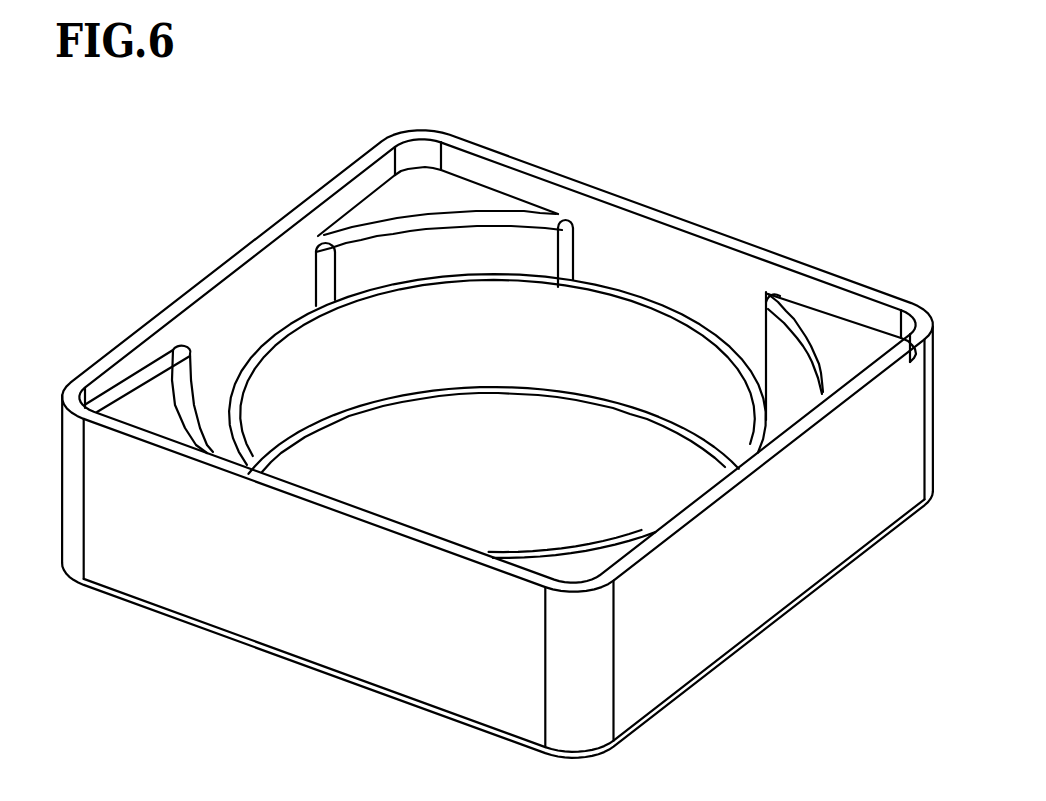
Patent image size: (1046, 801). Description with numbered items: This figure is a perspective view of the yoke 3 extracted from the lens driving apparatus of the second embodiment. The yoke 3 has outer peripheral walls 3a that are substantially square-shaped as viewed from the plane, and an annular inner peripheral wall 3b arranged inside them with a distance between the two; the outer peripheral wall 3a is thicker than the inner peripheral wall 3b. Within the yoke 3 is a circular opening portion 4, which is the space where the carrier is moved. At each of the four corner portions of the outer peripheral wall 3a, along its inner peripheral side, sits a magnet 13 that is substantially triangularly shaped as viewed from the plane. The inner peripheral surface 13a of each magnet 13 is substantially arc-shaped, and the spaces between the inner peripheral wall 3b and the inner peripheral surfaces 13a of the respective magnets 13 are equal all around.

The yoke 3 is at (807, 197).
The outer peripheral wall 3a is at (653, 240).
The inner peripheral wall 3b is at (557, 350).
The opening portion 4 is at (652, 496).
The magnet 13 is at (445, 188).
The inner peripheral surface 13a is at (378, 250).